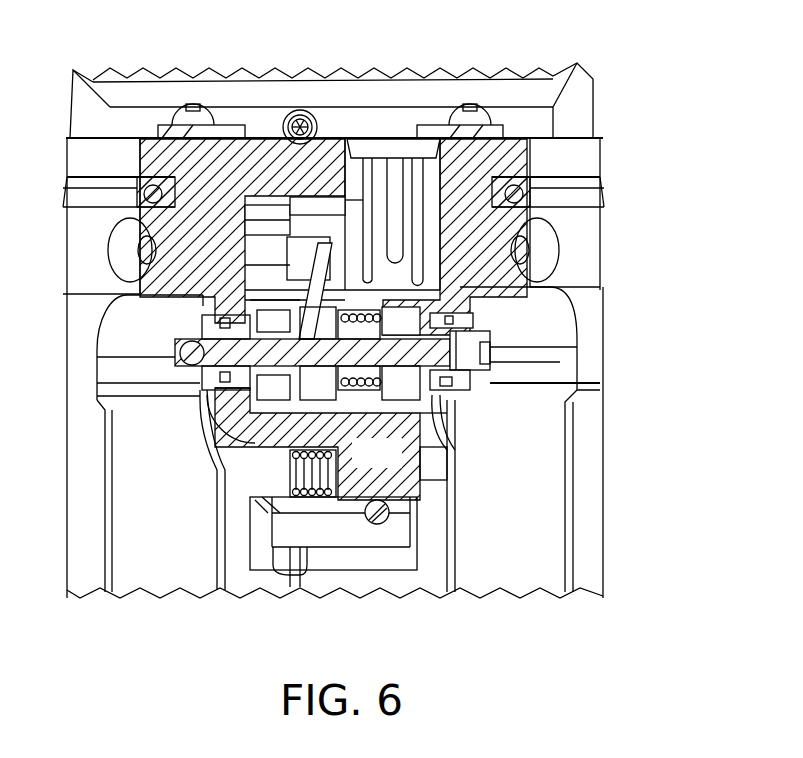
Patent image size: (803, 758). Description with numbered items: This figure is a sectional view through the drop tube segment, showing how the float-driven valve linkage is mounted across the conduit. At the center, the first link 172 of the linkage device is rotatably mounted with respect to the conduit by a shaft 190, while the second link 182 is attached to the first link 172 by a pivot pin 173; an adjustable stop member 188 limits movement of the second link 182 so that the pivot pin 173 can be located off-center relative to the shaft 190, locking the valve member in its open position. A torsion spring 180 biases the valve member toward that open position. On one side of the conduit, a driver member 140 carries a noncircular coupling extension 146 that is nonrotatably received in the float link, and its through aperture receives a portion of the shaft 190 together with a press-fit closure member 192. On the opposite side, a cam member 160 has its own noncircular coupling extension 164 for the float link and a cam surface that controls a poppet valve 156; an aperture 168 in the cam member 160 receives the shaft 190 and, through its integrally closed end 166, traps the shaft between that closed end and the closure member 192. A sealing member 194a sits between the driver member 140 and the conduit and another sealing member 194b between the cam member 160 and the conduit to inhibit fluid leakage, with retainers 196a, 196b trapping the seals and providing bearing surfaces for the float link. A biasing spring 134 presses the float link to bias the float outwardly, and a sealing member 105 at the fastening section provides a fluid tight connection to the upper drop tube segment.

The sealing member 105 is at (600, 186).
The adjustable stop member 188 is at (302, 111).
The poppet valve 156 is at (412, 146).
The second link 182 is at (280, 206).
The pivot pin 173 is at (280, 253).
The closure member 192 is at (176, 352).
The sealing member 194a is at (212, 318).
The sealing member 194b is at (448, 320).
The noncircular coupling extension 146 is at (193, 382).
The retainer 196a is at (212, 392).
The retainer 196b is at (445, 396).
The driver member 140 is at (270, 412).
The torsion spring 180 is at (362, 517).
The biasing spring 134 is at (315, 497).
The first link 172 is at (335, 500).
The cam member 160 is at (403, 414).
The shaft 190 is at (397, 353).
The aperture 168 is at (450, 345).
The noncircular coupling extension 164 is at (462, 392).
The integrally closed end 166 is at (483, 367).